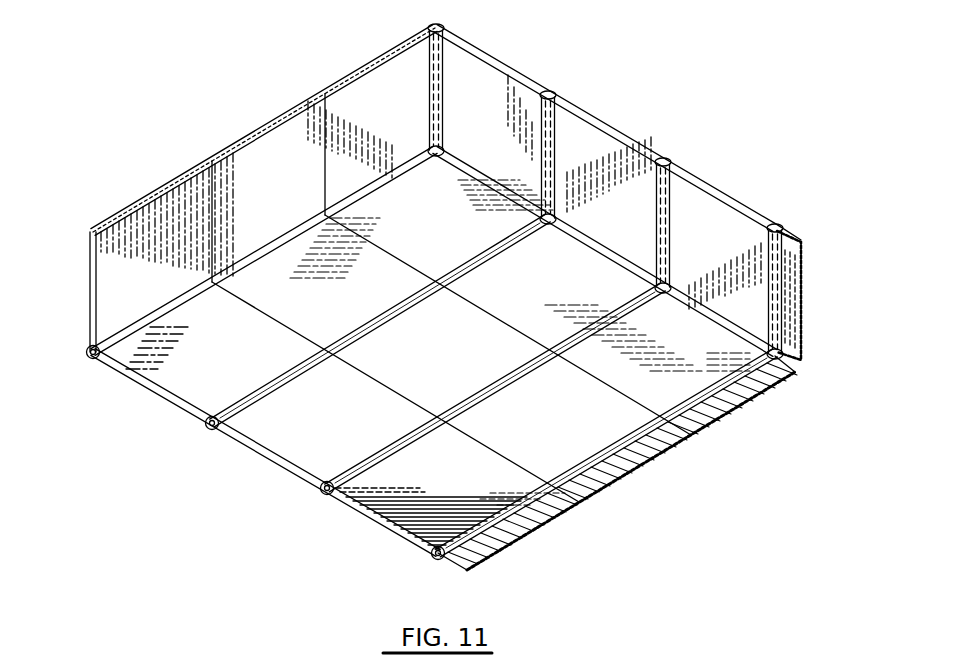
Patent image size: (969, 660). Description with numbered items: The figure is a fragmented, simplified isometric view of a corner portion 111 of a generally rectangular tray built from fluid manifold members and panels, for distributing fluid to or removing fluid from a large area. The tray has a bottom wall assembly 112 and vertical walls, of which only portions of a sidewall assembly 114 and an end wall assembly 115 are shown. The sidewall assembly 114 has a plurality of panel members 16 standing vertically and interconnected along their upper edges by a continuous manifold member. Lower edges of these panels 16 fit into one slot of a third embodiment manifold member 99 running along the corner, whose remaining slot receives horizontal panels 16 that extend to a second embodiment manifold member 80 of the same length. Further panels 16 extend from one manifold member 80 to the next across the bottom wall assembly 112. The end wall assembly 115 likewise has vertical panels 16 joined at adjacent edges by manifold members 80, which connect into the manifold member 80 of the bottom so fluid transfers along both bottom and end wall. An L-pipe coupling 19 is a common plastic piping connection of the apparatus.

The panel member 16 is at (380, 94).
The L-pipe coupling 19 is at (445, 158).
The second embodiment manifold member 80 is at (552, 125).
The third embodiment manifold member 99 is at (437, 90).
The corner portion 111 is at (641, 518).
The bottom wall assembly 112 is at (325, 431).
The sidewall assembly 114 is at (262, 128).
The end wall assembly 115 is at (636, 132).